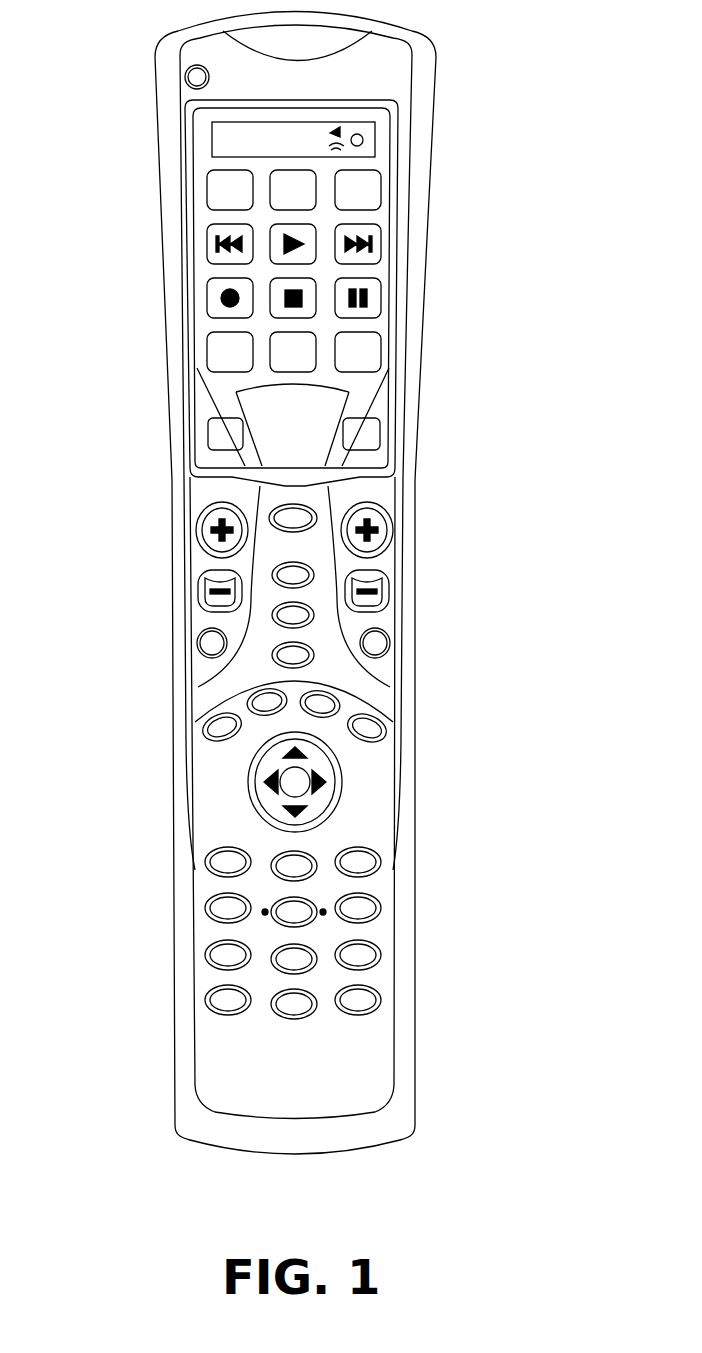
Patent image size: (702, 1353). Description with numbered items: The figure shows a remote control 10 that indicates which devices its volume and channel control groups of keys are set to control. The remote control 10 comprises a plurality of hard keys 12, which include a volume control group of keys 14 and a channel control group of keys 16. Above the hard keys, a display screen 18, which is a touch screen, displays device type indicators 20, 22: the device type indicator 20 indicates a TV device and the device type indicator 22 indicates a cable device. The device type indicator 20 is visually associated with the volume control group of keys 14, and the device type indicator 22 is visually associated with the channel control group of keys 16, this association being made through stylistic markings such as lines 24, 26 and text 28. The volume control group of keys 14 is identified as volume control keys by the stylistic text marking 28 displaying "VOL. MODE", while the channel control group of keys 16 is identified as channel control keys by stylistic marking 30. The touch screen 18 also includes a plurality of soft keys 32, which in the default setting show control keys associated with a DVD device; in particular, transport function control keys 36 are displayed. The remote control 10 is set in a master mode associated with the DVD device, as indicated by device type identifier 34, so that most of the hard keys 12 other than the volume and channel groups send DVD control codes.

The remote control 10 is at (425, 89).
The hard keys 12 is at (507, 1055).
The volume control group of keys 14 is at (197, 503).
The channel control group of keys 16 is at (385, 502).
The display screen 18 is at (207, 213).
The device type indicator 20 is at (208, 427).
The device type indicator 22 is at (378, 422).
The line 24 is at (210, 380).
The line 26 is at (207, 683).
The text 28 is at (213, 455).
The stylistic marking 30 is at (378, 460).
The soft keys 32 is at (507, 165).
The device type identifier 34 is at (340, 395).
The transport function control keys 36 is at (388, 292).